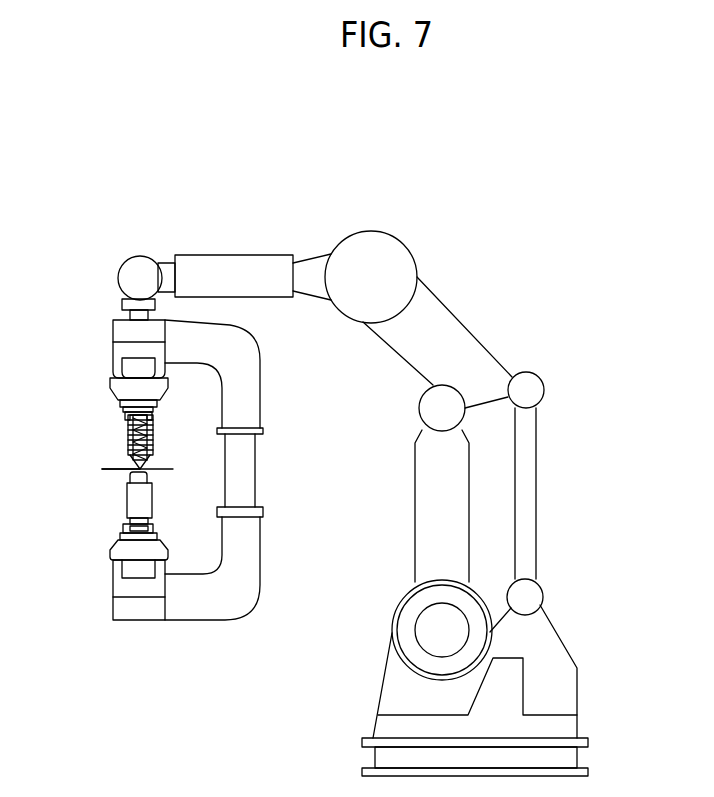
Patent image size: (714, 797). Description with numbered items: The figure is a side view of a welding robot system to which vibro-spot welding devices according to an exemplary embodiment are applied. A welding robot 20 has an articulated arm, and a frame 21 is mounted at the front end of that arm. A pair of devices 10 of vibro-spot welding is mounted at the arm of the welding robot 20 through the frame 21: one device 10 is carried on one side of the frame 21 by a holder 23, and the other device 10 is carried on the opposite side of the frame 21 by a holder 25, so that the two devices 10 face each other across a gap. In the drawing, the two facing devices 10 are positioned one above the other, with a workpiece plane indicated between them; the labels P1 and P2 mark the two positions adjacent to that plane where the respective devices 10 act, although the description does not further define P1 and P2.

The welding robot 20 is at (552, 446).
The frame 21 is at (243, 397).
The holder 23 is at (133, 390).
The holder 25 is at (130, 550).
The device of vibro-spot welding 10 is at (127, 438).
The first position P1 is at (163, 468).
The second position P2 is at (112, 470).